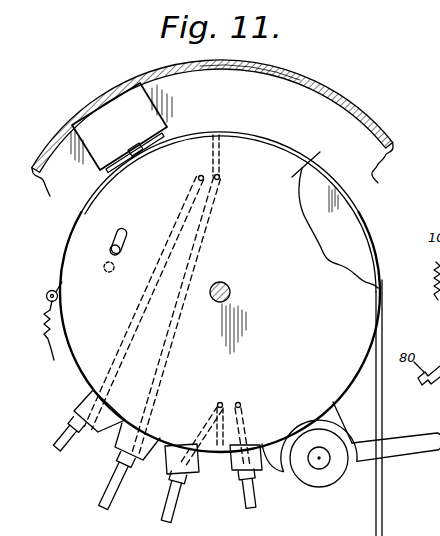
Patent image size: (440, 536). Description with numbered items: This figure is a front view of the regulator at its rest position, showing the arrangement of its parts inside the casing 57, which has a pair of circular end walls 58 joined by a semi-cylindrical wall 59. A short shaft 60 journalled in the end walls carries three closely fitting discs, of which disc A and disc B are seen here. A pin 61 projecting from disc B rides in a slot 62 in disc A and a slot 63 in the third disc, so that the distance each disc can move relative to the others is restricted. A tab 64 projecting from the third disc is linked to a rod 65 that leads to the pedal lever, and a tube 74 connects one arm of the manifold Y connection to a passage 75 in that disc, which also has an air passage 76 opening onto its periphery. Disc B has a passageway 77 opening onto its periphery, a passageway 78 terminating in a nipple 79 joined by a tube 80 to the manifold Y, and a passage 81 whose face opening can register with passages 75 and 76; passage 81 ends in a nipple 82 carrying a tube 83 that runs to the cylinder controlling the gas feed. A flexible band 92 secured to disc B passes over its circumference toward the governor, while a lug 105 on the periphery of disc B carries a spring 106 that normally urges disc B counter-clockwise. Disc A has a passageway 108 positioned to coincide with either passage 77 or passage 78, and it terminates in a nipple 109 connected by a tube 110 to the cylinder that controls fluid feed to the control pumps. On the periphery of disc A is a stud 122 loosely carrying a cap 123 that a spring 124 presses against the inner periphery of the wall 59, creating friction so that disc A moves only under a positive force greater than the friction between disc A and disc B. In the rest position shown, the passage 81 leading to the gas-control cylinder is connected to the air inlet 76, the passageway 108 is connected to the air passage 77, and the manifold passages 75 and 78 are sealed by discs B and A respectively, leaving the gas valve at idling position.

The casing 57 is at (347, 98).
The circular end wall 58 is at (381, 165).
The semi-cylindrical wall 59 is at (267, 74).
The short shaft 60 is at (232, 291).
The pin 61 is at (120, 249).
The slot 62 is at (125, 231).
The slot 63 is at (114, 267).
The tab 64 is at (321, 496).
The rod 65 is at (407, 447).
The tube 74 is at (256, 499).
The passage 75 is at (246, 410).
The passage 76 is at (194, 441).
The passageway 77 is at (223, 156).
The passageway 78 is at (133, 333).
The nipple 79 is at (97, 436).
The tube 80 is at (67, 432).
The passage 81 is at (202, 426).
The nipple 82 is at (193, 472).
The tube 83 is at (177, 508).
The flexible band 92 is at (383, 333).
The lug 105 is at (53, 290).
The spring 106 is at (50, 357).
The passageway 108 is at (208, 223).
The nipple 109 is at (142, 462).
The tube 110 is at (109, 503).
The stud 122 is at (134, 157).
The cap 123 is at (147, 110).
The spring 124 is at (167, 128).
The disc A is at (344, 148).
The disc B is at (348, 228).